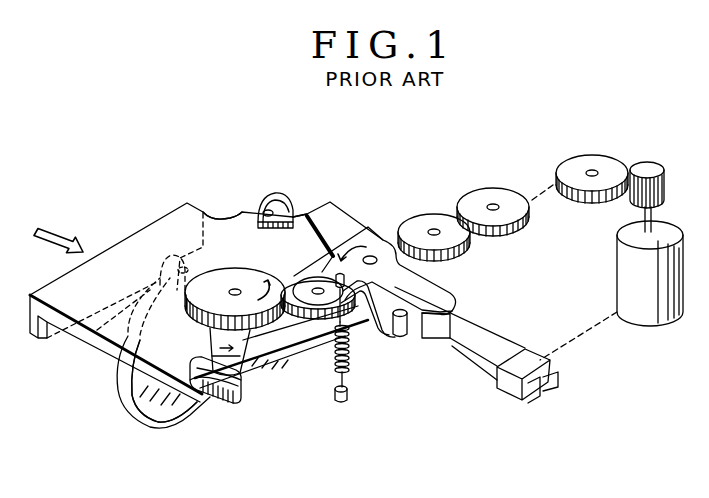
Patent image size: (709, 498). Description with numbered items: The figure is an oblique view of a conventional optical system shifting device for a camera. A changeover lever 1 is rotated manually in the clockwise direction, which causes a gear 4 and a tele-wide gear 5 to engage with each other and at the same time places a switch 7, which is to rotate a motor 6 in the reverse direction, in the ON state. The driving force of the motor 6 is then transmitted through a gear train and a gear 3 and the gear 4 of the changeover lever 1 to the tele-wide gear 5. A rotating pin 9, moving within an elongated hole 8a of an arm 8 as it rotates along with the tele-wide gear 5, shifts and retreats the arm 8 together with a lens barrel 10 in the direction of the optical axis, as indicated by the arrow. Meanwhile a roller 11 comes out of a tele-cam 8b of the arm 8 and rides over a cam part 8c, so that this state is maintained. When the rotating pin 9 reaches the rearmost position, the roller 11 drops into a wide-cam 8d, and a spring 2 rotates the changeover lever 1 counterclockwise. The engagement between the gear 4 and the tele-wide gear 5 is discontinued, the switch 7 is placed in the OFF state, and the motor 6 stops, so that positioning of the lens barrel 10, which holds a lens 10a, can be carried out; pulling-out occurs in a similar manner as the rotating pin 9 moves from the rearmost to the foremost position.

The changeover lever 1 is at (356, 233).
The spring 2 is at (348, 367).
The gear 3 is at (392, 238).
The gear 4 is at (312, 262).
The tele-wide gear 5 is at (234, 272).
The motor 6 is at (642, 322).
The switch 7 is at (507, 397).
The arm 8 is at (153, 255).
The elongated hole 8a is at (197, 403).
The tele-cam 8b is at (365, 307).
The cam part 8c is at (330, 227).
The wide-cam 8d is at (207, 213).
The rotating pin 9 is at (233, 397).
The lens barrel 10 is at (120, 385).
The lens 10a is at (157, 412).
The roller 11 is at (292, 208).